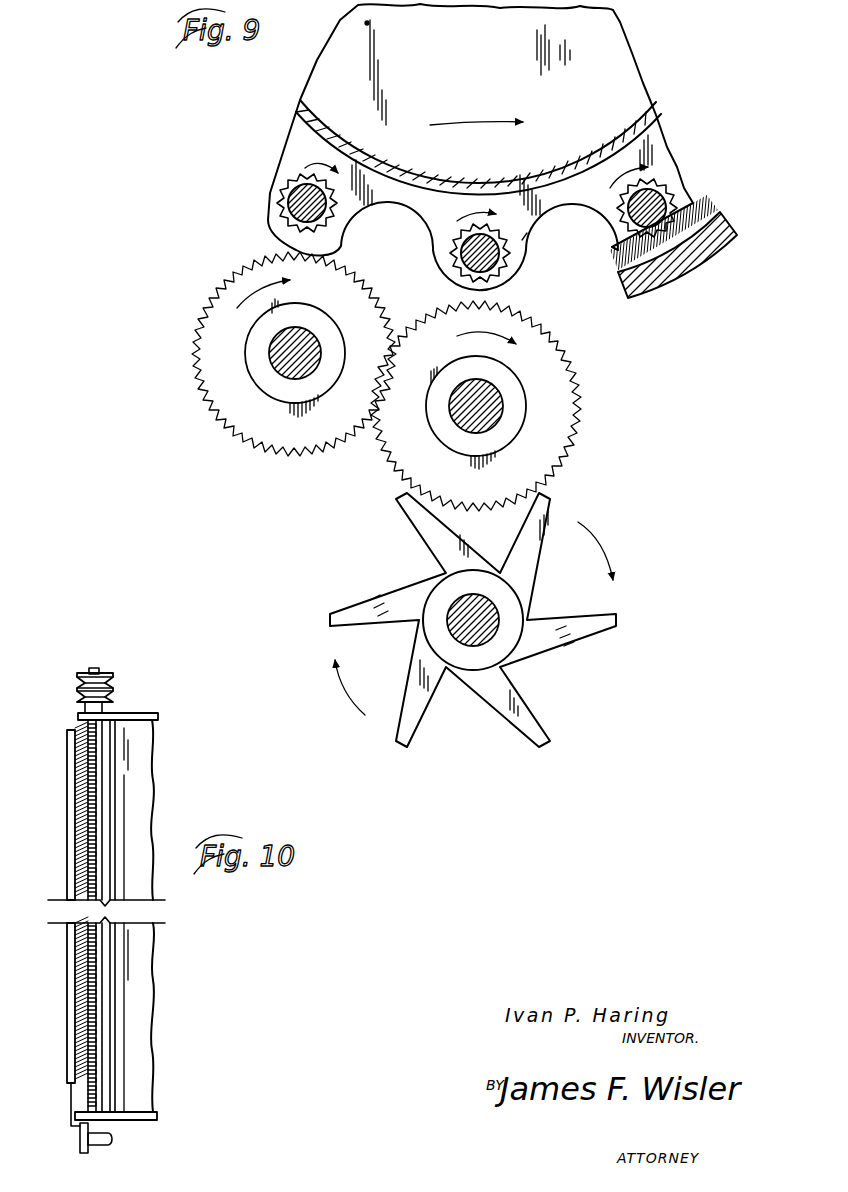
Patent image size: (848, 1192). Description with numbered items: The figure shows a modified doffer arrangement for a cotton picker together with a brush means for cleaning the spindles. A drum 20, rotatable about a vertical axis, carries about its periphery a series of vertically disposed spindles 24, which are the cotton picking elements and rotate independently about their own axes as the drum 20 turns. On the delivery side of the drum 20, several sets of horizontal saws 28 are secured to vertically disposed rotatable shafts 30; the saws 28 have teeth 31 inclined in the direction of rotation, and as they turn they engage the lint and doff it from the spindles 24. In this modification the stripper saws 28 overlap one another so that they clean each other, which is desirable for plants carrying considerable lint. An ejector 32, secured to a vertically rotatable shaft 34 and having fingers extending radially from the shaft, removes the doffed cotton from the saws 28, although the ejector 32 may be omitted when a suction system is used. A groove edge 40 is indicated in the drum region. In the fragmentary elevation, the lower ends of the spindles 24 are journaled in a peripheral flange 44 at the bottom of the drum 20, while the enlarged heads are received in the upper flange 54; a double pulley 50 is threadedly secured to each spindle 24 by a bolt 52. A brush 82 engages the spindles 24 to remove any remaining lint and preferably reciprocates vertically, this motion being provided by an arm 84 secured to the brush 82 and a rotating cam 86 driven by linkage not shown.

In FIG. 9, the drum 20 is at (630, 76).
In FIG. 10, the drum 20 is at (140, 889).
In FIG. 9, the spindle 24 is at (273, 216).
In FIG. 10, the spindle 24 is at (84, 876).
In FIG. 9, the saw 28 is at (222, 382).
In FIG. 9, the shaft 30 is at (282, 356).
In FIG. 9, the teeth 31 is at (205, 300).
In FIG. 9, the ejector 32 is at (592, 632).
In FIG. 9, the shaft 34 is at (455, 622).
In FIG. 9, the groove edge 40 is at (516, 240).
In FIG. 9, the peripheral flange 44 is at (678, 186).
In FIG. 10, the peripheral flange 44 is at (148, 1120).
In FIG. 10, the double pulley 50 is at (114, 684).
In FIG. 10, the bolt 52 is at (95, 668).
In FIG. 10, the upper flange 54 is at (138, 716).
In FIG. 9, the brush 82 is at (688, 262).
In FIG. 10, the brush 82 is at (66, 800).
In FIG. 10, the arm 84 is at (69, 1104).
In FIG. 10, the cam 86 is at (80, 1138).